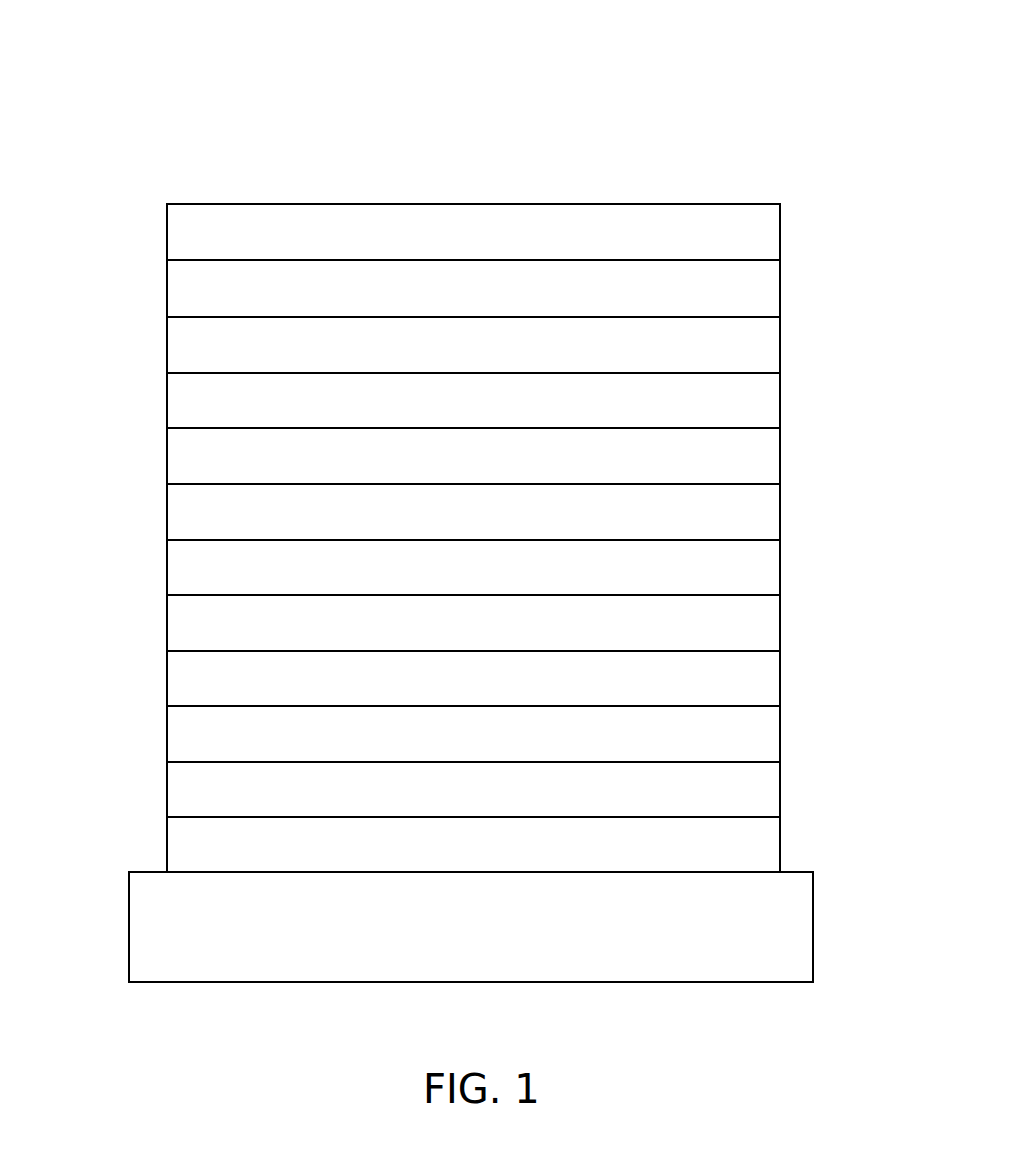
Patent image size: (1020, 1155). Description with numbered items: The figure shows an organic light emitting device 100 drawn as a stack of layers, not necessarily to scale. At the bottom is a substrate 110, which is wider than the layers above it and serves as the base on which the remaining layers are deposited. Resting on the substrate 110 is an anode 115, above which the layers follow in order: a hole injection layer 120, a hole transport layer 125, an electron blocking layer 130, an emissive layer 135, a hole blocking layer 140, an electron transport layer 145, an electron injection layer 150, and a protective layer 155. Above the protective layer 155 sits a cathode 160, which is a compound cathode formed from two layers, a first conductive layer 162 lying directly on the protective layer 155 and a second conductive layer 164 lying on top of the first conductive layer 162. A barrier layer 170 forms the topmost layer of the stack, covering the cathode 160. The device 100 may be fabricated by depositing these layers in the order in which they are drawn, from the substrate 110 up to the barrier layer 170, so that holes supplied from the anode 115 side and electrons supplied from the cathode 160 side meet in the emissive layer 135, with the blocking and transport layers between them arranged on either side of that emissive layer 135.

The organic light emitting device 100 is at (312, 158).
The substrate 110 is at (427, 983).
The anode 115 is at (167, 844).
The hole injection layer 120 is at (167, 790).
The hole transport layer 125 is at (167, 734).
The electron blocking layer 130 is at (167, 678).
The emissive layer 135 is at (167, 623).
The hole blocking layer 140 is at (167, 569).
The electron transport layer 145 is at (167, 513).
The electron injection layer 150 is at (167, 456).
The protective layer 155 is at (167, 402).
The cathode 160 is at (468, 316).
The first conductive layer 162 is at (780, 345).
The second conductive layer 164 is at (780, 288).
The barrier layer 170 is at (167, 235).